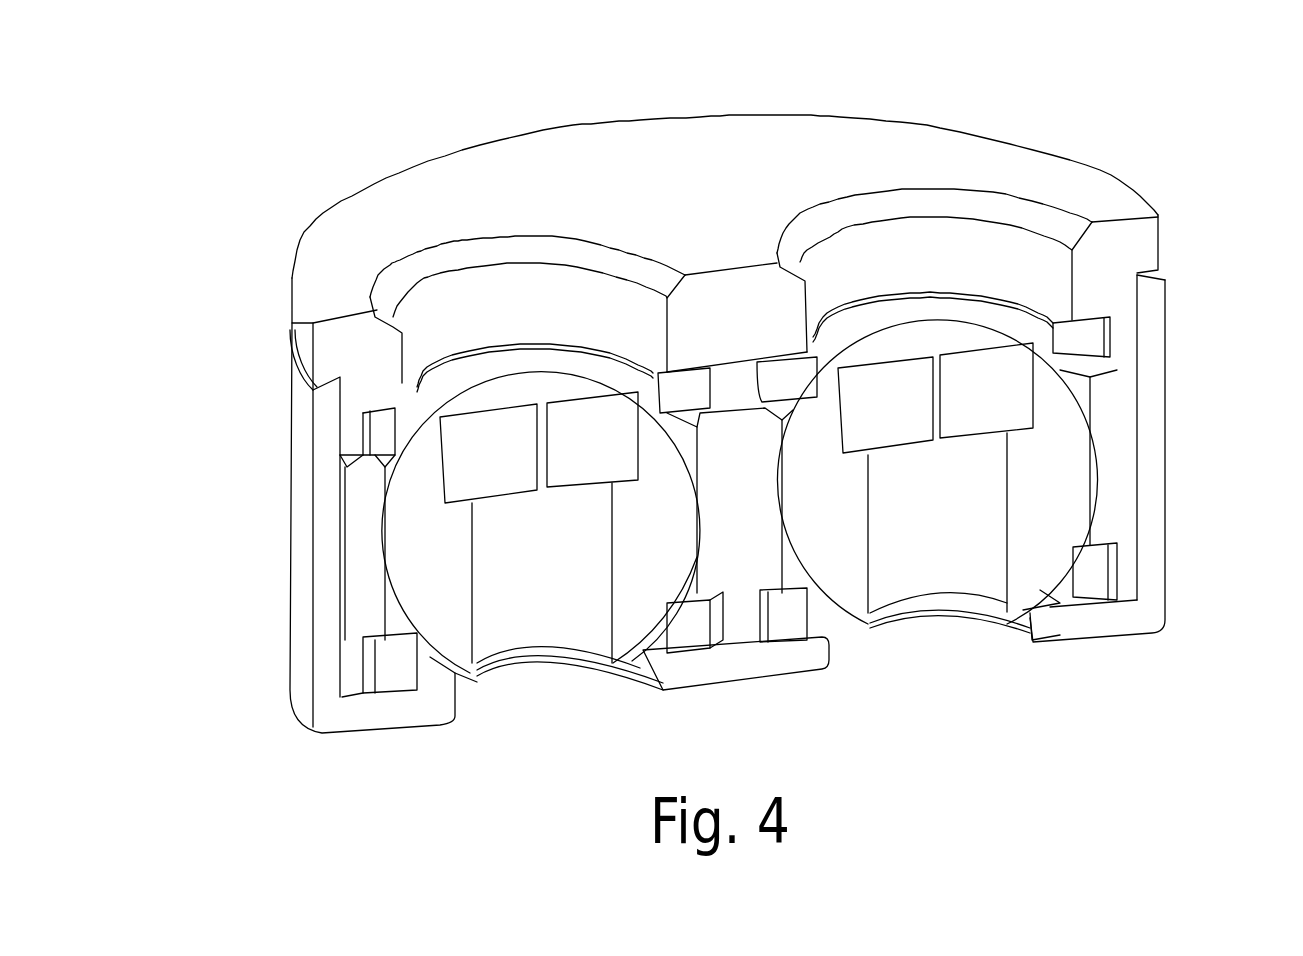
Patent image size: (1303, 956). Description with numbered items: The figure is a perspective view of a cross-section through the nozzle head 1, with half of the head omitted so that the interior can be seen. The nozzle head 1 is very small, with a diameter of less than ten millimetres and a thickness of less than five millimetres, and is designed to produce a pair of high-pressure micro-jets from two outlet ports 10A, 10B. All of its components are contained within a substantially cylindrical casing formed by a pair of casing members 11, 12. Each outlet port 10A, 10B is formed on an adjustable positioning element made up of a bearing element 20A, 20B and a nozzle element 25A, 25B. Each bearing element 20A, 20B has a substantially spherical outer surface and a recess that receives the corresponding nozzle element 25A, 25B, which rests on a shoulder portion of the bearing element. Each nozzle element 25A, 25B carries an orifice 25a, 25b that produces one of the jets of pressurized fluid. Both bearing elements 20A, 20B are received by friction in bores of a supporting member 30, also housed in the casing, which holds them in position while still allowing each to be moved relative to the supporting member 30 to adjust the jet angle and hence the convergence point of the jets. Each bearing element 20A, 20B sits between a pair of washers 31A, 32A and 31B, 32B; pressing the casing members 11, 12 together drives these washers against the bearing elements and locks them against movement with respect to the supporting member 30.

The nozzle head 1 is at (1172, 194).
The casing member 11 is at (1157, 508).
The casing member 12 is at (598, 150).
The outlet port 10A is at (544, 612).
The outlet port 10B is at (942, 572).
The bearing element 20A is at (462, 571).
The bearing element 20B is at (1012, 518).
The orifice 25a is at (527, 392).
The orifice 25b is at (940, 352).
The nozzle element 25A is at (539, 527).
The nozzle element 25B is at (935, 478).
The supporting member 30 is at (358, 548).
The washer 31A is at (397, 670).
The washer 31B is at (1090, 588).
The washer 32A is at (391, 430).
The washer 32B is at (1085, 340).